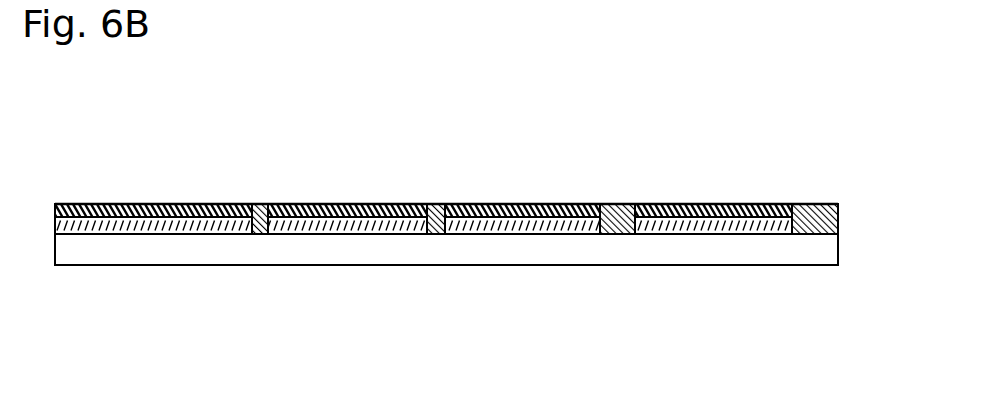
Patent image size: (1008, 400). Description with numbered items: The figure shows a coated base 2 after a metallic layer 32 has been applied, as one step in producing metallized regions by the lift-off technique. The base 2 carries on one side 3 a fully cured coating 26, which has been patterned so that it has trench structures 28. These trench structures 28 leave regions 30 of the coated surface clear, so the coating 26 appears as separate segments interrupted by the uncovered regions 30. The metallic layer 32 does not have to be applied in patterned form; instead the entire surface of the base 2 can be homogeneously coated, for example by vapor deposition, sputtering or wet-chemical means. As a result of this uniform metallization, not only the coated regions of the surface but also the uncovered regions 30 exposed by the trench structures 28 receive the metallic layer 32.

The base 2 is at (293, 265).
The side 3 is at (105, 234).
The coating 26 is at (740, 204).
The trench structures 28 is at (240, 204).
The regions 30 is at (268, 204).
The metallic layer 32 is at (813, 204).